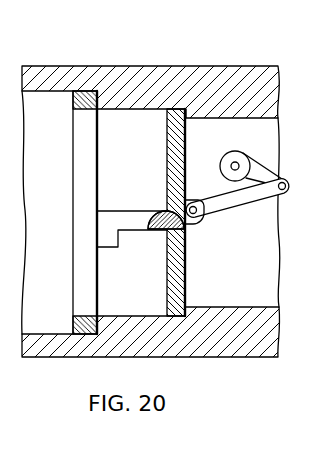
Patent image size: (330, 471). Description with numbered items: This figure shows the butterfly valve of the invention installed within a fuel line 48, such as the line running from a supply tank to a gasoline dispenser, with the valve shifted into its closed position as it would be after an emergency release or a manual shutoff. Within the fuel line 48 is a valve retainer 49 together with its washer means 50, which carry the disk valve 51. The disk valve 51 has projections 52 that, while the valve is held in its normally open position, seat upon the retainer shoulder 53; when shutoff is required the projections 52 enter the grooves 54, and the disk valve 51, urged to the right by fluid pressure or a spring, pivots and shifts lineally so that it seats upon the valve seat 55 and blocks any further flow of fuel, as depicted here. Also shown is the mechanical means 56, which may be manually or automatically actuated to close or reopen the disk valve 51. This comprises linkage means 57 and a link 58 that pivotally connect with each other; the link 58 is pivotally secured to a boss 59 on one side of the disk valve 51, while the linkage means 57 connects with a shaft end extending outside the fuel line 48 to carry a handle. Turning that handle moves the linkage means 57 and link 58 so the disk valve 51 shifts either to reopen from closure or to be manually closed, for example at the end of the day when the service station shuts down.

The fuel line 48 is at (220, 95).
The valve retainer 49 is at (122, 132).
The washer means 50 is at (80, 140).
The disk valve 51 is at (172, 162).
The projections 52 is at (165, 231).
The retainer shoulder 53 is at (116, 240).
The grooves 54 is at (128, 211).
The valve seat 55 is at (167, 308).
The mechanical means 56 is at (268, 151).
The linkage means 57 is at (263, 176).
The link 58 is at (238, 199).
The boss 59 is at (200, 223).